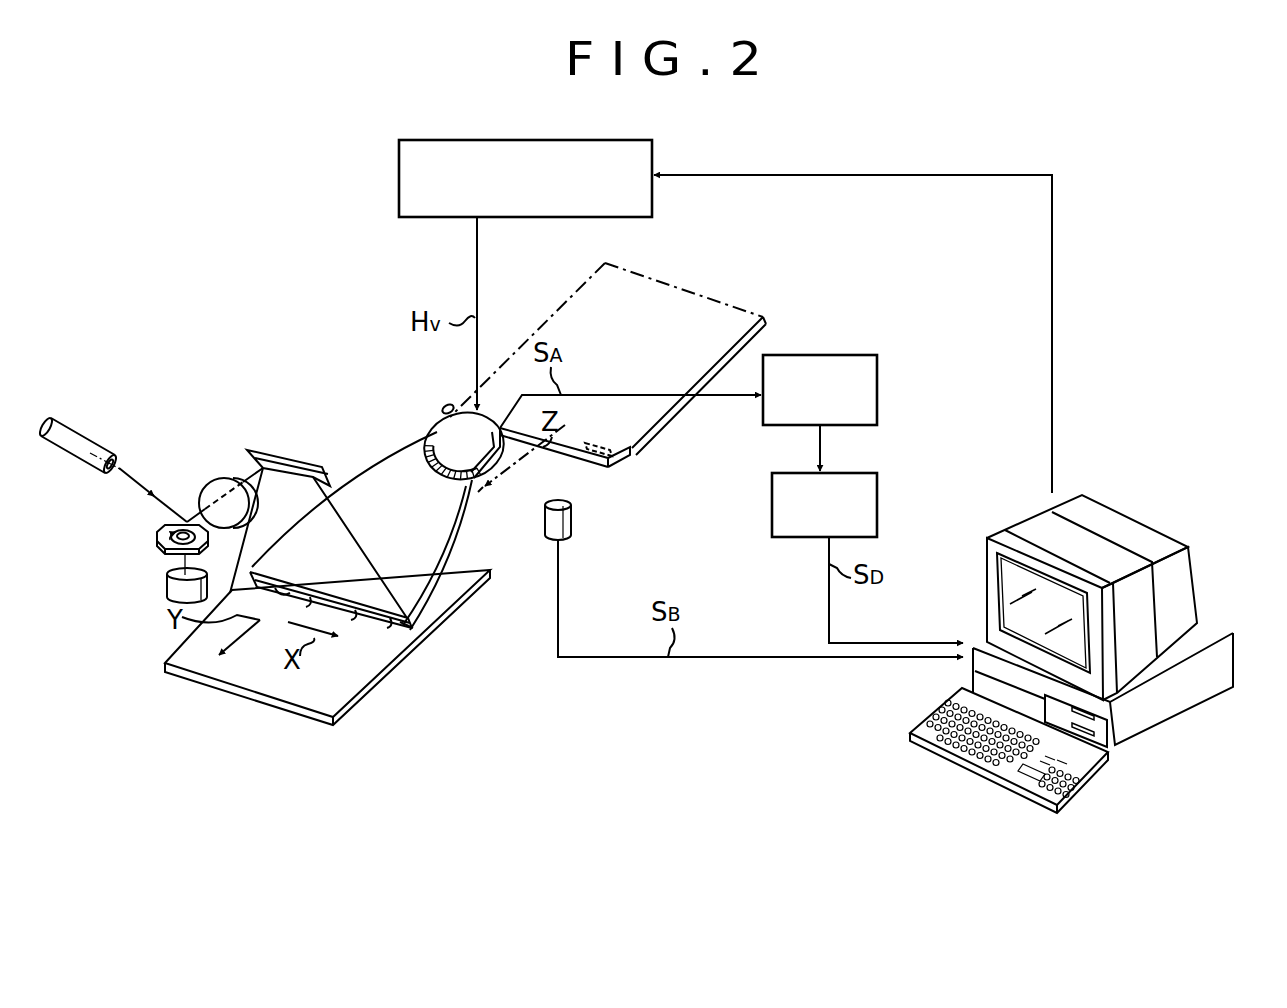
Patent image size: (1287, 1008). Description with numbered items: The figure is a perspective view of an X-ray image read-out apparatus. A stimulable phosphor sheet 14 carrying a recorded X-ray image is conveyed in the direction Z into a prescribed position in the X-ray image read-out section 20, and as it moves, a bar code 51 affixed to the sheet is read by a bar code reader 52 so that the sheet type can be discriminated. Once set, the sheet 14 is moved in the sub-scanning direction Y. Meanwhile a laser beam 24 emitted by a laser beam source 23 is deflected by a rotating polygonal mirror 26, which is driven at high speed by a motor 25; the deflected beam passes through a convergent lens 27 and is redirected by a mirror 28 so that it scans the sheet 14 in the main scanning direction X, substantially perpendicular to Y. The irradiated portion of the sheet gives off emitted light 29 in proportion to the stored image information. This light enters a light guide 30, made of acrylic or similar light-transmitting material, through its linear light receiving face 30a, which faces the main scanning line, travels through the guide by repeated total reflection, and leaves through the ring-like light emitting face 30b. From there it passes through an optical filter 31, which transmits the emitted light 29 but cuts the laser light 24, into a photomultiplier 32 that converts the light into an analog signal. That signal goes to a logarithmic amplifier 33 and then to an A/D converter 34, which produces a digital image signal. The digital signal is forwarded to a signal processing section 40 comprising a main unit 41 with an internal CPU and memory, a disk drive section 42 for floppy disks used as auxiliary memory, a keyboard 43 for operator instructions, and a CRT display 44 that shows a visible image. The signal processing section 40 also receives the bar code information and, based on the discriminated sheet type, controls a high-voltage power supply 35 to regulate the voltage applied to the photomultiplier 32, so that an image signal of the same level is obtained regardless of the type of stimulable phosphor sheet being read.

The stimulable phosphor sheet 14 is at (742, 303).
The X-ray image read-out section 20 is at (282, 426).
The laser beam source 23 is at (80, 430).
The laser beam 24 is at (137, 482).
The motor 25 is at (168, 585).
The rotating polygonal mirror 26 is at (158, 532).
The convergent lens 27 is at (212, 482).
The mirror 28 is at (303, 462).
The emitted light 29 is at (301, 594).
The light guide 30 is at (397, 490).
The light receiving face 30a is at (413, 628).
The light emitting face 30b is at (522, 482).
The optical filter 31 is at (457, 422).
The photomultiplier 32 is at (447, 406).
The logarithmic amplifier 33 is at (877, 382).
The A/D converter 34 is at (878, 503).
The high-voltage power supply 35 is at (399, 184).
The signal processing section 40 is at (1089, 645).
The main unit 41 is at (1207, 637).
The disk drive section 42 is at (1097, 718).
The keyboard 43 is at (1093, 767).
The CRT display 44 is at (1007, 585).
The bar code 51 is at (640, 462).
The bar code reader 52 is at (572, 523).